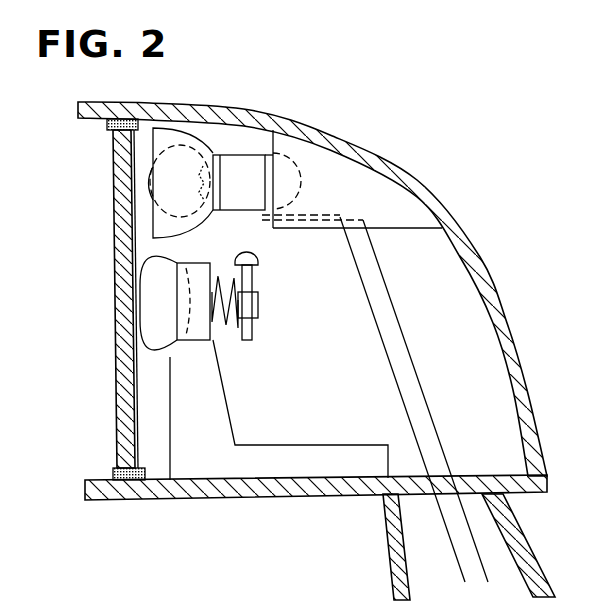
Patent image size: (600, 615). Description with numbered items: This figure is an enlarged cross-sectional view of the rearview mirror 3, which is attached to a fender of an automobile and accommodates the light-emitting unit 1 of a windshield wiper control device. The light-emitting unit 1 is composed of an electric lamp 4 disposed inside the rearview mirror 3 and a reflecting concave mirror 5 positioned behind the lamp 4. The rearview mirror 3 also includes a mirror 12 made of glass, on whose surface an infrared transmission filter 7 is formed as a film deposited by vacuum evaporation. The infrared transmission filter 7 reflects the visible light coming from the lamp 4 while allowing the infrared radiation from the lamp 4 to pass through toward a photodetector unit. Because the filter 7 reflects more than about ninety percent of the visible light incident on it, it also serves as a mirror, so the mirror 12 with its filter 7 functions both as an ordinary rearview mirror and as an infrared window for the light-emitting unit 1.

The light-emitting unit 1 is at (243, 148).
The rearview mirror 3 is at (417, 190).
The electric lamp 4 is at (205, 152).
The reflecting concave mirror 5 is at (172, 135).
The infrared transmission filter 7 is at (113, 167).
The mirror 12 is at (115, 384).